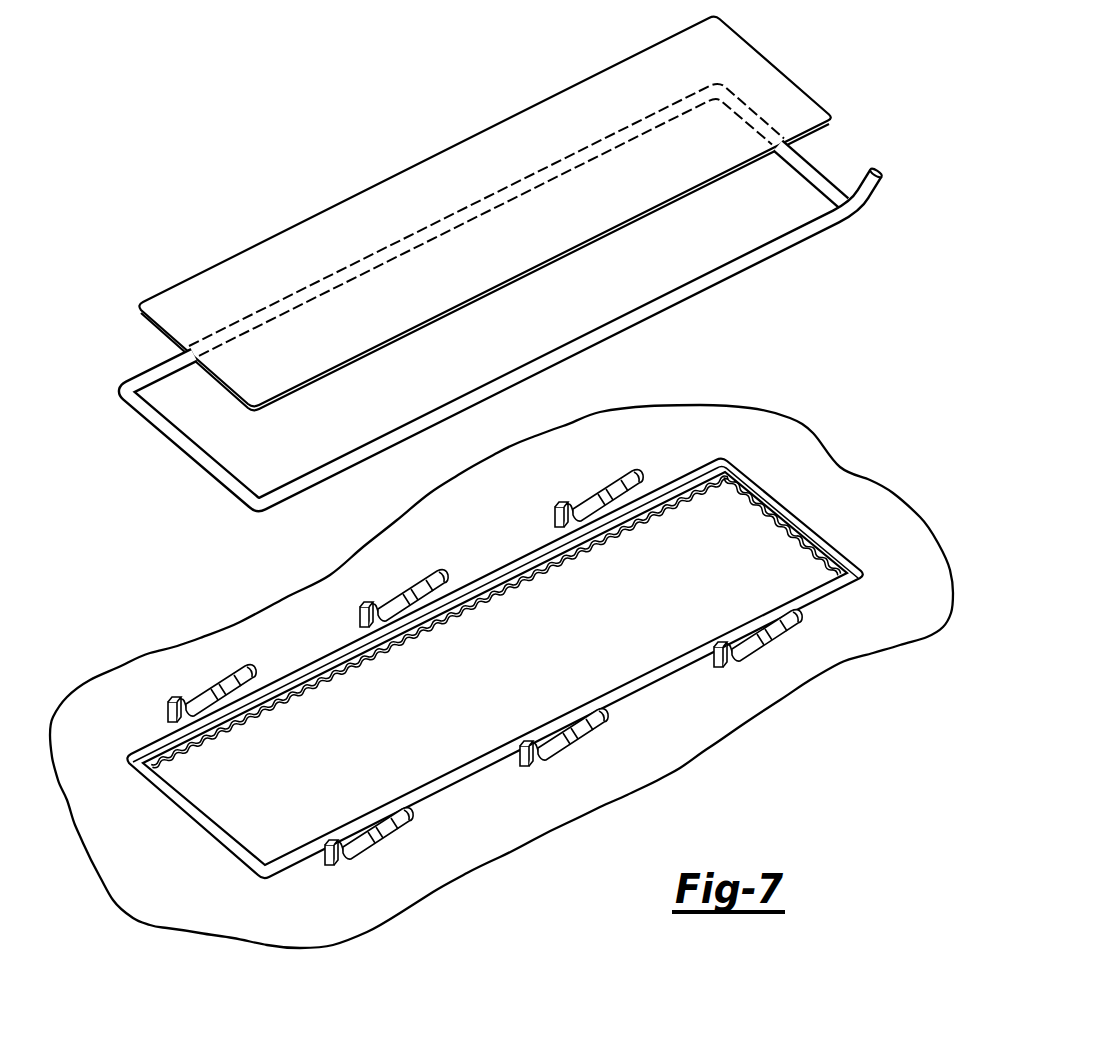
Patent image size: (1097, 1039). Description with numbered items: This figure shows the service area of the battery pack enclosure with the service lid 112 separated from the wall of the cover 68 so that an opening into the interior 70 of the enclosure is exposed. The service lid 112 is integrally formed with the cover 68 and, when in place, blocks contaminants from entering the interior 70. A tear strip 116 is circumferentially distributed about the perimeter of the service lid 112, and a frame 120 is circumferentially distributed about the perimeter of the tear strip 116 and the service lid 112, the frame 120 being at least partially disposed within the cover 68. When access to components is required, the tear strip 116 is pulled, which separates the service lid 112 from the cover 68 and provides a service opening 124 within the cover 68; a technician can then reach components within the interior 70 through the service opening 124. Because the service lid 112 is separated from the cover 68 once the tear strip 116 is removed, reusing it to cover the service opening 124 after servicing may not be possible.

The cover 68 is at (842, 482).
The interior 70 is at (256, 809).
The service lid 112 is at (310, 268).
The tear strip 116 is at (773, 245).
The frame 120 is at (586, 507).
The service opening 124 is at (762, 582).